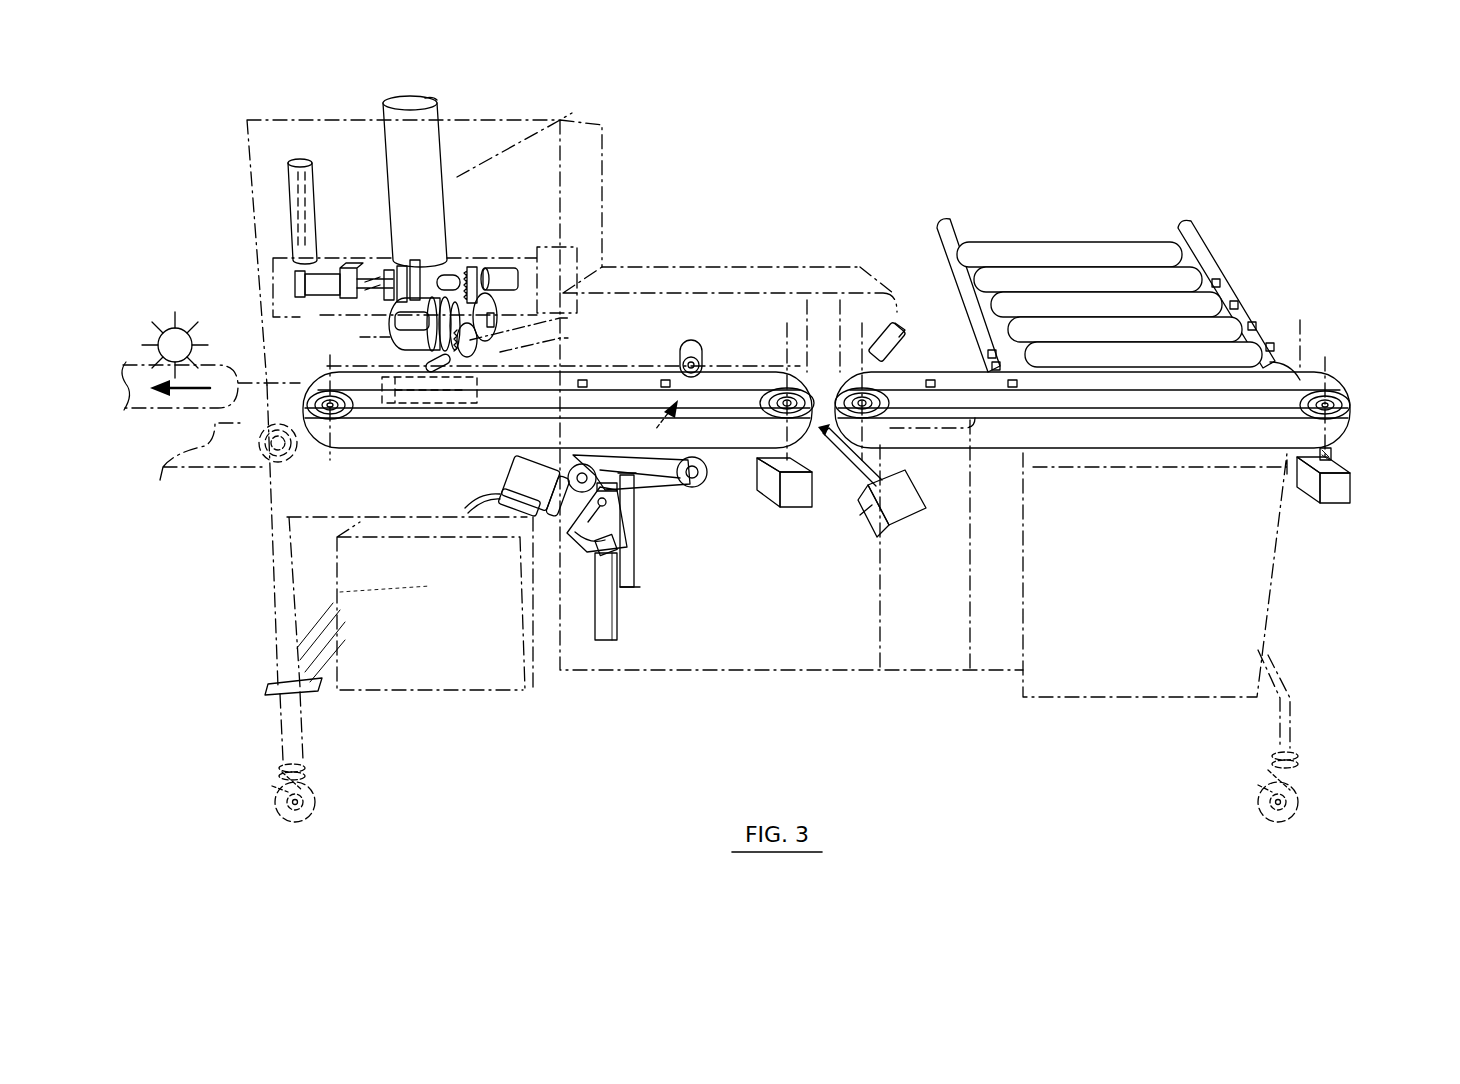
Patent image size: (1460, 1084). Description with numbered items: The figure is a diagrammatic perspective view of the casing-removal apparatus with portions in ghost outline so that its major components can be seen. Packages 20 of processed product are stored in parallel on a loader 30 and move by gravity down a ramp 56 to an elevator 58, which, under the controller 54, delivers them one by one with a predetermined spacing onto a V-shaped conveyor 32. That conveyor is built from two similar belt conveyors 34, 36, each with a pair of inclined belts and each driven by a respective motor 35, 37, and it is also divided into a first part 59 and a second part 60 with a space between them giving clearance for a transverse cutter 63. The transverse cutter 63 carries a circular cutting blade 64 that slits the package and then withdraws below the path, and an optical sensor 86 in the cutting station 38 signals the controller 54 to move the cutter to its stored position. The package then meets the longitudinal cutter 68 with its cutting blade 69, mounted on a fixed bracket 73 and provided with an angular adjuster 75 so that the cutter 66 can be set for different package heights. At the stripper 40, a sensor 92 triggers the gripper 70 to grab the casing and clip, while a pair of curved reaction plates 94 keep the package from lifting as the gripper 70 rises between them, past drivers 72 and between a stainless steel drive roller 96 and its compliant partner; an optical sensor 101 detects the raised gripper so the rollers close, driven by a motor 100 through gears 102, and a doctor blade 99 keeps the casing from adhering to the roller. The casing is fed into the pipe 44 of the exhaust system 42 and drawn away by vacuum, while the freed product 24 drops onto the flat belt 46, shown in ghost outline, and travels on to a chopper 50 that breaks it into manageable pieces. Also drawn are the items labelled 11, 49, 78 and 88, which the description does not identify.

The motor 11 is at (506, 479).
The package 20 is at (1027, 304).
The product 24 is at (194, 333).
The loader 30 is at (1112, 218).
The V-shaped conveyor 32 is at (1355, 383).
The belt conveyor 34 is at (1372, 405).
The motor 35 is at (1340, 505).
The belt conveyor 36 is at (1322, 360).
The motor 37 is at (792, 503).
The cutting station 38 is at (804, 660).
The stripper 40 is at (602, 212).
The exhaust system 42 is at (565, 118).
The pipe 44 is at (437, 110).
The flat belt 46 is at (222, 470).
The conveyor end roller 49 is at (1343, 432).
The chopper 50 is at (189, 282).
The controller 54 is at (1146, 685).
The ramp 56 is at (1225, 263).
The elevator 58 is at (1287, 365).
The first part of conveyor 59 is at (1003, 468).
The second part of conveyor 60 is at (722, 450).
The transverse cutter 63 is at (866, 535).
The circular cutting blade 64 is at (821, 446).
The cutter 66 is at (916, 512).
The longitudinal cutter 68 is at (648, 532).
The cutting blade 69 is at (700, 480).
The gripper 70 is at (313, 312).
The drivers 72 is at (551, 348).
The fixed bracket 73 is at (606, 608).
The angular adjuster 75 is at (584, 552).
The actuator 78 is at (393, 310).
The optical sensor 86 is at (904, 345).
The guide roller 88 is at (706, 350).
The sensor 92 is at (439, 345).
The curved reaction plates 94 is at (472, 398).
The drive roller 96 is at (386, 351).
The doctor blade 99 is at (403, 330).
The motor 100 is at (541, 322).
The optical sensor 101 is at (446, 274).
The gears 102 is at (496, 308).